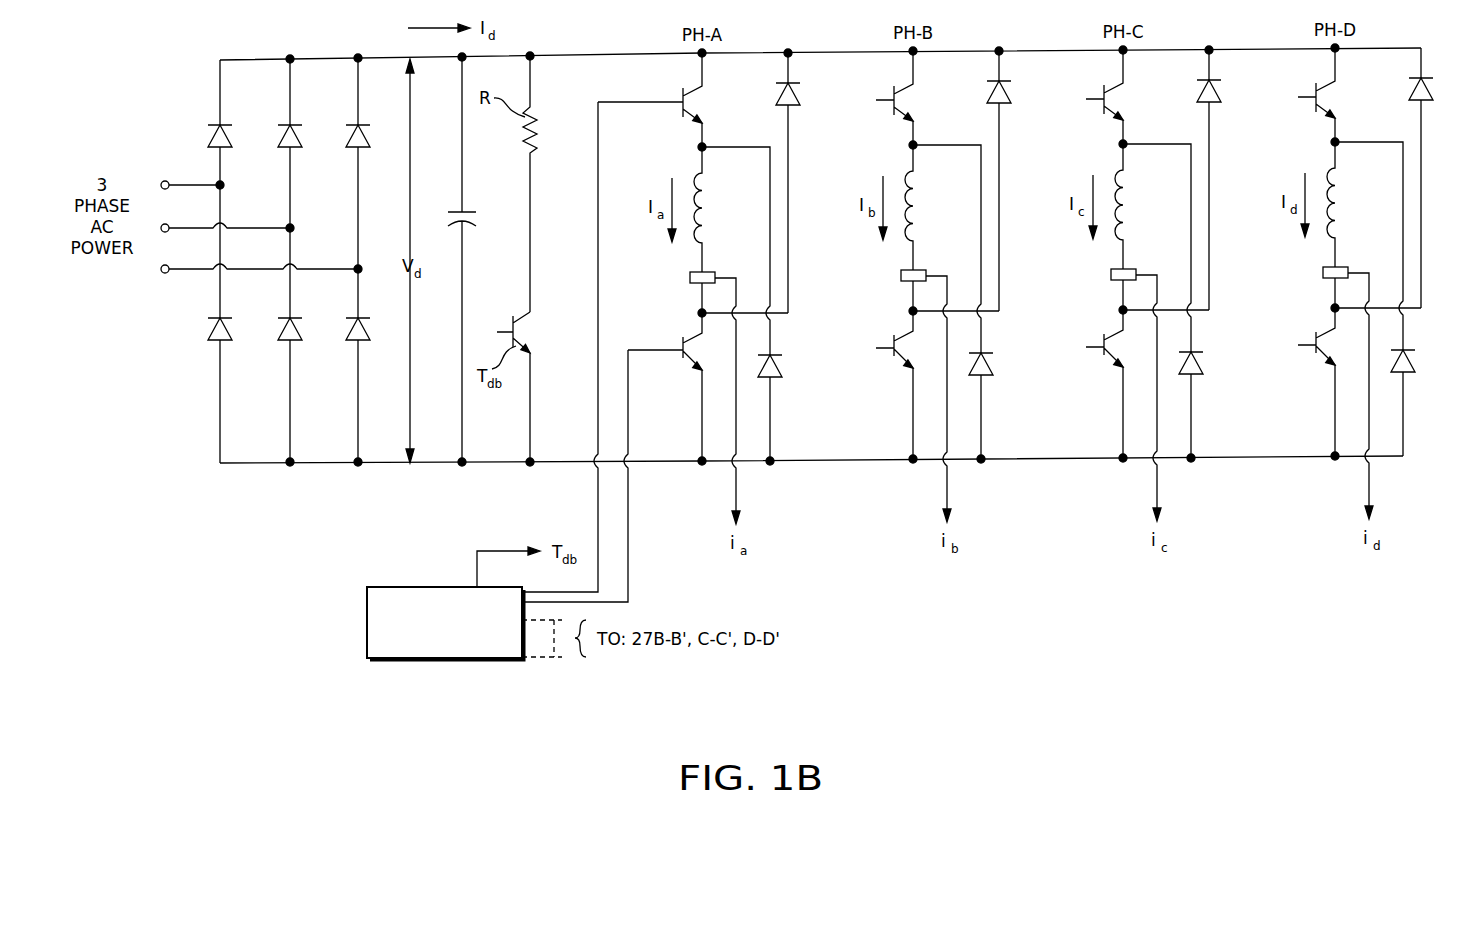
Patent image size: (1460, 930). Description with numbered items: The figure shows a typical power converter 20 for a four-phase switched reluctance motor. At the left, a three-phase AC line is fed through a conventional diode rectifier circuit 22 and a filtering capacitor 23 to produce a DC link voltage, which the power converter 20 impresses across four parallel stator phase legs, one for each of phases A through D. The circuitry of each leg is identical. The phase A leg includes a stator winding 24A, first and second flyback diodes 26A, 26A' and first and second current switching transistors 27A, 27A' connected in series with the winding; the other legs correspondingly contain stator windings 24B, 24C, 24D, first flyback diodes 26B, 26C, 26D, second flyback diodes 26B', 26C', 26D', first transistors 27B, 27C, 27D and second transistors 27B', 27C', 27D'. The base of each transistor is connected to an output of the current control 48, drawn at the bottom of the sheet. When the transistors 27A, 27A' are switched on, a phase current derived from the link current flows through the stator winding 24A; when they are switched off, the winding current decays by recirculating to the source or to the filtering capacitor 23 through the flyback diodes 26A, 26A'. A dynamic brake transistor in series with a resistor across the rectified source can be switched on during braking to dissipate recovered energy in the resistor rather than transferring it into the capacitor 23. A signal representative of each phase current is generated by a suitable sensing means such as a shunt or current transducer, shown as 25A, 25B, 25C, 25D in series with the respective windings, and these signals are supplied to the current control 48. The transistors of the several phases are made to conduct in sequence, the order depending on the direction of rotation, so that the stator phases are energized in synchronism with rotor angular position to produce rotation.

The power converter 20 is at (830, 33).
The diode rectifier circuit 22 is at (332, 180).
The filtering capacitor 23 is at (468, 211).
The stator winding 24A is at (698, 174).
The stator winding 24B is at (880, 201).
The stator winding 24C is at (1090, 200).
The stator winding 24D is at (1302, 198).
The current sensing means 25A is at (690, 283).
The current sensing means 25B is at (883, 290).
The current sensing means 25C is at (1093, 289).
The current sensing means 25D is at (1305, 287).
The first flyback diode 26A is at (761, 183).
The first flyback diode 26B is at (972, 181).
The first flyback diode 26C is at (1182, 180).
The first flyback diode 26D is at (1394, 178).
The second flyback diode 26A' is at (767, 304).
The second flyback diode 26B' is at (978, 302).
The second flyback diode 26C' is at (1188, 301).
The second flyback diode 26D' is at (1397, 299).
The first current switching transistor 27A is at (650, 100).
The first current switching transistor 27B is at (868, 98).
The first current switching transistor 27C is at (1078, 97).
The first current switching transistor 27D is at (1290, 95).
The second current switching transistor 27A' is at (665, 387).
The second current switching transistor 27B' is at (883, 385).
The second current switching transistor 27C' is at (1093, 384).
The second current switching transistor 27D' is at (1305, 382).
The current control 48 is at (446, 660).